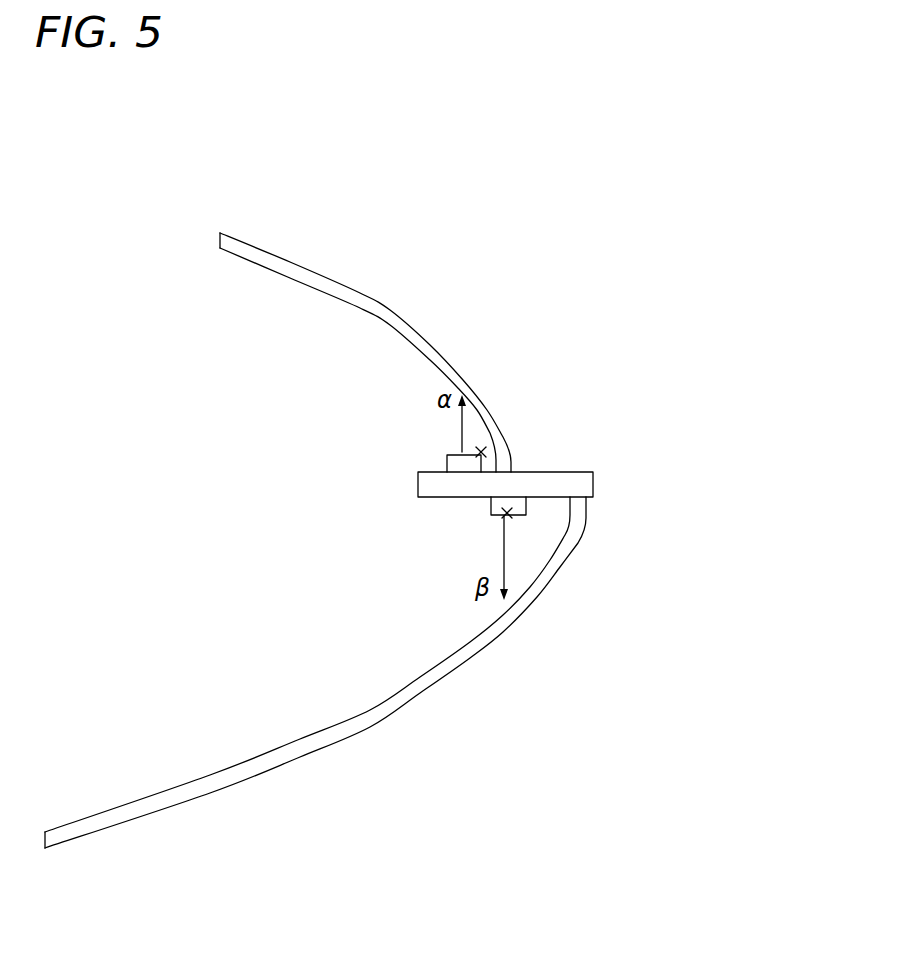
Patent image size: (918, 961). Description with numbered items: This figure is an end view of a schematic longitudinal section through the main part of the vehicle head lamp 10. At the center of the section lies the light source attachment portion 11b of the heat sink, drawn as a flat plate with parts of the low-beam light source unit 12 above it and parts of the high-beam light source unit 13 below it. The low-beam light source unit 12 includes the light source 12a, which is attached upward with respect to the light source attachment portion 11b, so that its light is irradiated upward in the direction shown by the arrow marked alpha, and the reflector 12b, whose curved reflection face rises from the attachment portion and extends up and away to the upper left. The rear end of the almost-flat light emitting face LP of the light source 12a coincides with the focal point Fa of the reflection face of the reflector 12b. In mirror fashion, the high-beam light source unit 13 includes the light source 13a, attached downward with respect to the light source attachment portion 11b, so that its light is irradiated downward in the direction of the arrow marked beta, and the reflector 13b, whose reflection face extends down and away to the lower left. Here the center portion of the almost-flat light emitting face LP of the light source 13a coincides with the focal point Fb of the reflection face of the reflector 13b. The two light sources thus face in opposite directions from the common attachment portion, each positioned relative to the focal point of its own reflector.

The vehicle head lamp 10 is at (543, 203).
The light source attachment portion 11b is at (593, 485).
The low-beam light source unit 12 is at (168, 234).
The light source 12a is at (446, 460).
The reflector 12b is at (247, 246).
The high-beam light source unit 13 is at (66, 896).
The light source 13a is at (490, 505).
The reflector 13b is at (298, 751).
The focal point Fa is at (484, 452).
The focal point Fb is at (508, 514).
The light emitting face LP is at (453, 455).